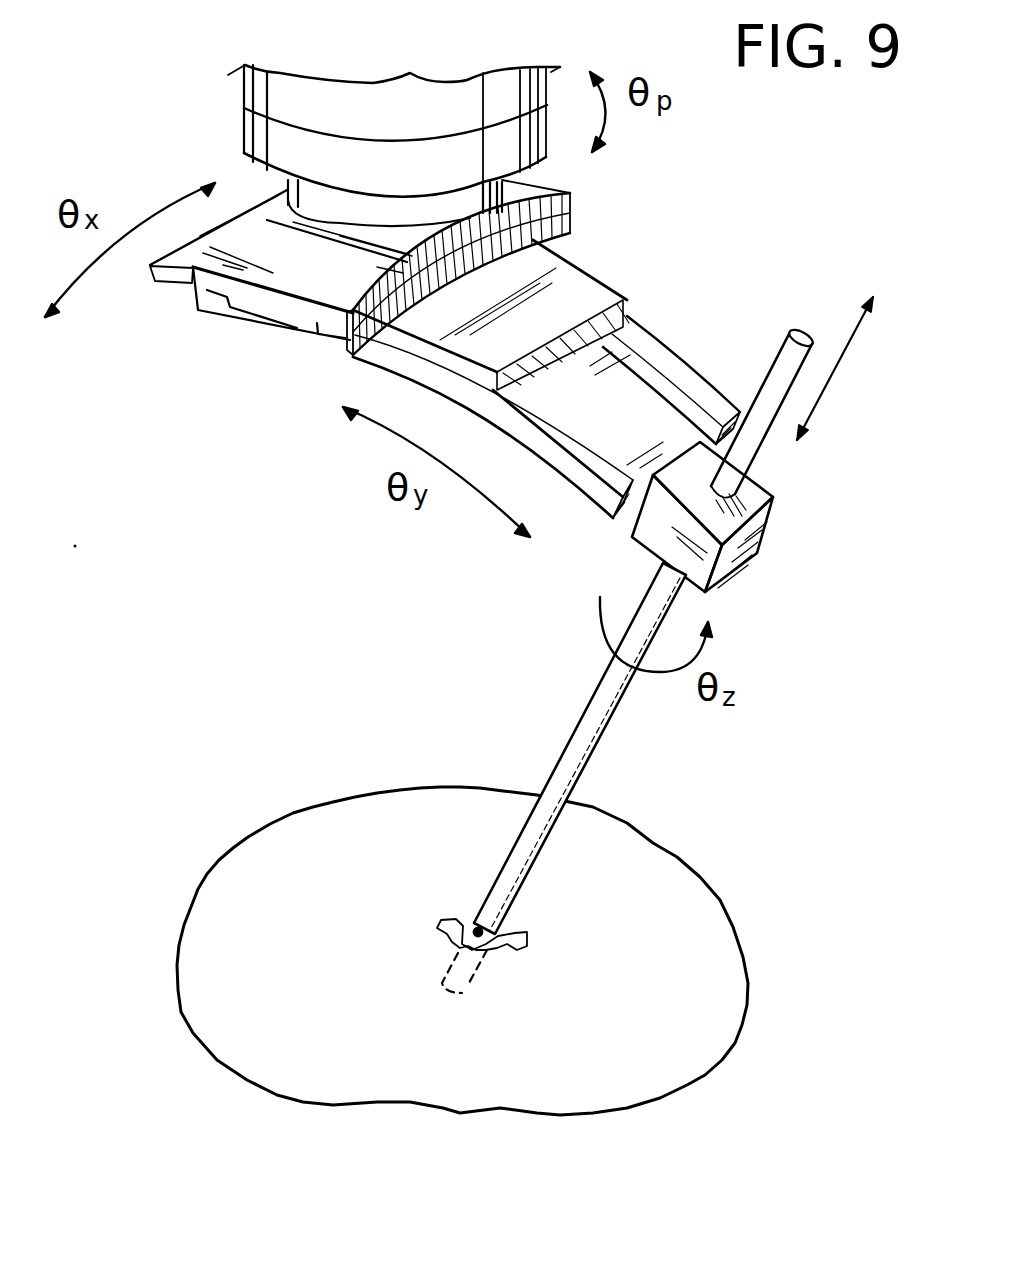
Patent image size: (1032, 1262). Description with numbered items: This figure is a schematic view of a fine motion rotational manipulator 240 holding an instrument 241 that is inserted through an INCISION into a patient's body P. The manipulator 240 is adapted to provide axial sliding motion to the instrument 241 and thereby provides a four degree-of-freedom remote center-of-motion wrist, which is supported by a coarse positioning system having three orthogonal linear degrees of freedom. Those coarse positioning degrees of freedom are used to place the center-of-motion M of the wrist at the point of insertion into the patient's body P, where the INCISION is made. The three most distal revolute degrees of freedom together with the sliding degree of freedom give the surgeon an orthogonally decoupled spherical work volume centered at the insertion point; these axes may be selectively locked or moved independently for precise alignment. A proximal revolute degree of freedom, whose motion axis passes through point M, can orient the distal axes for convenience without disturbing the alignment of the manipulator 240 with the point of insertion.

The fine motion rotational manipulator 240 is at (597, 190).
The instrument 241 is at (580, 718).
The patient's body p is at (678, 852).
The center-of-motion M is at (520, 931).
The incision INCISION is at (658, 1027).